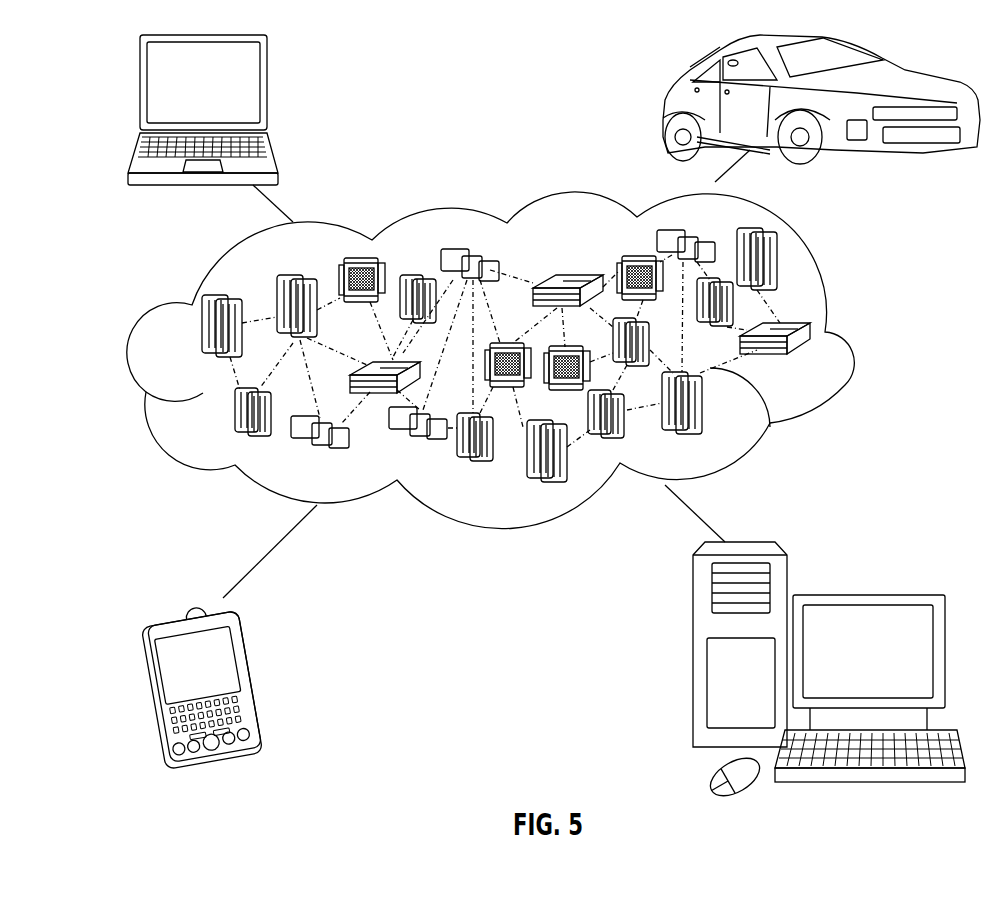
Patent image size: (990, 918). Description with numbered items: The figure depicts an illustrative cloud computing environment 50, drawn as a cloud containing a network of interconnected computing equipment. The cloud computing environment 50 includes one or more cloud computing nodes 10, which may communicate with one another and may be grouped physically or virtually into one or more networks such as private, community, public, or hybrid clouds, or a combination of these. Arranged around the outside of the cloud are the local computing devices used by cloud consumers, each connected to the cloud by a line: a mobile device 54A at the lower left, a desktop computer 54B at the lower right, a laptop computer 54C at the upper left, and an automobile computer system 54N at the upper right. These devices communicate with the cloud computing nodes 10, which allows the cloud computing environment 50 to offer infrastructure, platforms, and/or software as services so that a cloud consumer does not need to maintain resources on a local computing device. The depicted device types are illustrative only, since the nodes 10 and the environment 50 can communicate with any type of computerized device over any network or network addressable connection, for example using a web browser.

The laptop computer 54C is at (268, 90).
The automobile computer system 54N is at (667, 107).
The cloud computing environment 50 is at (523, 360).
The cloud computing node 10 is at (890, 327).
The mobile device 54A is at (257, 675).
The desktop computer 54B is at (865, 592).